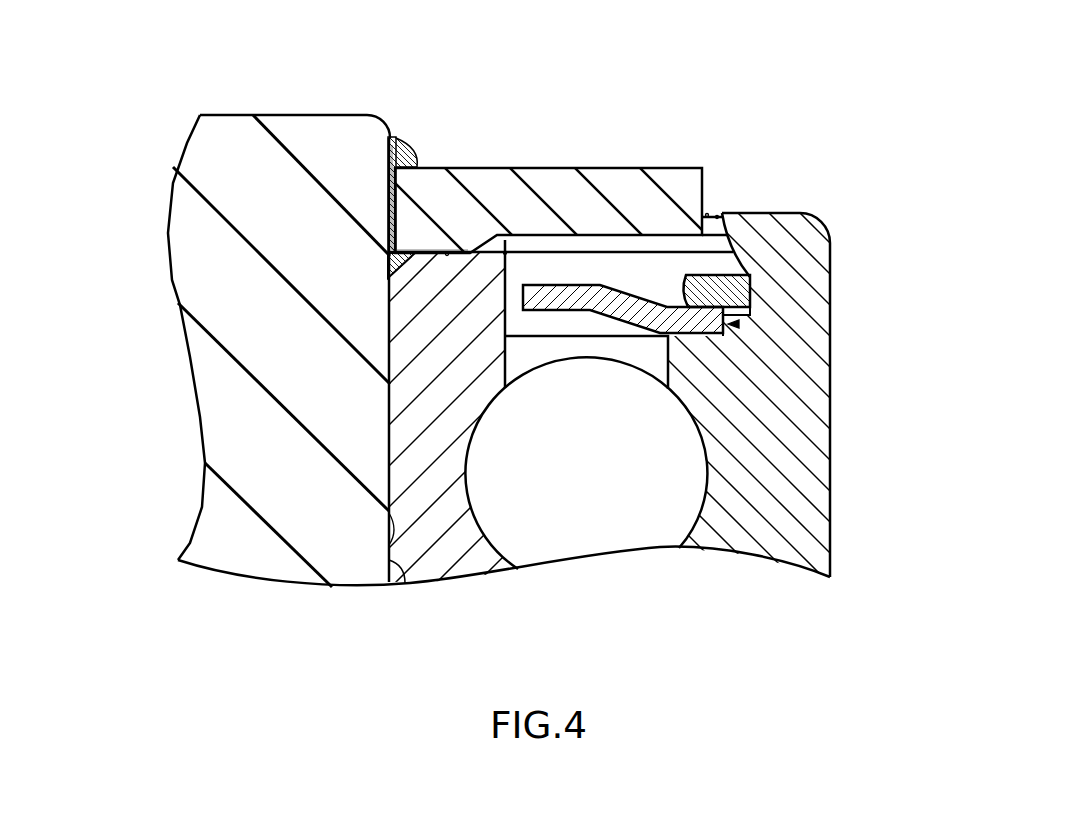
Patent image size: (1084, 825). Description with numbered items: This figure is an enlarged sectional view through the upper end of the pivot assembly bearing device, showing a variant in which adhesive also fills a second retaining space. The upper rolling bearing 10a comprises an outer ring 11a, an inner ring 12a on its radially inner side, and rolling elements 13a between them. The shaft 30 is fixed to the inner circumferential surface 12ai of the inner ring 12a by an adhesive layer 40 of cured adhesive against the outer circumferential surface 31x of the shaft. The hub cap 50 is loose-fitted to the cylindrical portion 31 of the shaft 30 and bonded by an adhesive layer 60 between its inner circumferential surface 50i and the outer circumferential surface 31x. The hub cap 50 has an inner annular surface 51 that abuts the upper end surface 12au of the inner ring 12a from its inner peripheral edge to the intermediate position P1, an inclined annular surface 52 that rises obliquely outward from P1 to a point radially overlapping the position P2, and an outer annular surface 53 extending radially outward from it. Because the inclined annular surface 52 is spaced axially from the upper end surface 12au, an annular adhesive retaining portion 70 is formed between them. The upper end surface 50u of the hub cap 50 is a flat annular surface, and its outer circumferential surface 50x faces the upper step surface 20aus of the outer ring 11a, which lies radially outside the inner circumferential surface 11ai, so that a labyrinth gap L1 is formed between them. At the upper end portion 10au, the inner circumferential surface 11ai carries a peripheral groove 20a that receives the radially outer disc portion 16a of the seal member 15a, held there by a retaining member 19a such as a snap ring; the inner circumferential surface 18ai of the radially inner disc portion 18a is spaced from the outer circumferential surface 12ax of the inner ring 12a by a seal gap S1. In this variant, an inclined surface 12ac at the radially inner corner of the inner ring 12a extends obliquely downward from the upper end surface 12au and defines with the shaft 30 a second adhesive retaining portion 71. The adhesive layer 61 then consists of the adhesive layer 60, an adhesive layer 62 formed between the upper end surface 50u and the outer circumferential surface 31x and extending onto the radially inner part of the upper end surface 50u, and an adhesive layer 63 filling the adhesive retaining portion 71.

The upper rolling bearing 10a is at (876, 534).
The upper end portion 10au is at (787, 243).
The outer ring 11a is at (757, 572).
The inner circumferential surface 11ai is at (668, 357).
The inner ring 12a is at (465, 585).
The upper end surface 12au is at (390, 252).
The inclined surface 12ac is at (393, 262).
The outer circumferential surface 12ax is at (500, 352).
The inner circumferential surface 12ai is at (388, 453).
The rolling elements 13a is at (582, 477).
The seal member 15a is at (740, 325).
The radially outer disc portion 16a is at (695, 340).
The radially inner disc portion 18a is at (522, 312).
The inner circumferential surface 18ai is at (520, 297).
The retaining member 19a is at (752, 291).
The peripheral groove 20a is at (750, 278).
The upper step surface 20aus is at (717, 217).
The shaft 30 is at (228, 97).
The cylindrical portion 31 is at (317, 128).
The outer circumferential surface 31x is at (388, 517).
The adhesive layer 40 is at (407, 580).
The hub cap 50 is at (514, 158).
The upper end surface 50u is at (593, 165).
The inner circumferential surface 50i is at (390, 167).
The outer circumferential surface 50x is at (702, 213).
The inner annular surface 51 is at (437, 253).
The inclined annular surface 52 is at (500, 238).
The outer annular surface 53 is at (664, 236).
The adhesive layer 60 is at (390, 200).
The adhesive layer 61 is at (378, 158).
The adhesive layer 62 is at (393, 132).
The adhesive layer 63 is at (390, 270).
The adhesive retaining portion 70 is at (468, 253).
The adhesive retaining portion 71 is at (390, 250).
The position P1 is at (447, 255).
The position P2 is at (505, 253).
The seal gap S1 is at (505, 278).
The labyrinth gap L1 is at (707, 213).